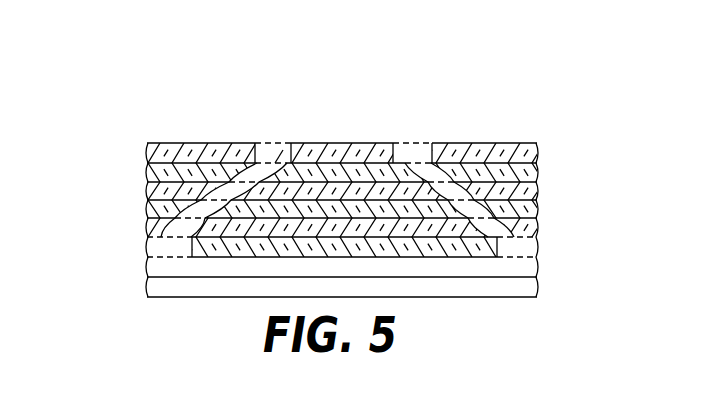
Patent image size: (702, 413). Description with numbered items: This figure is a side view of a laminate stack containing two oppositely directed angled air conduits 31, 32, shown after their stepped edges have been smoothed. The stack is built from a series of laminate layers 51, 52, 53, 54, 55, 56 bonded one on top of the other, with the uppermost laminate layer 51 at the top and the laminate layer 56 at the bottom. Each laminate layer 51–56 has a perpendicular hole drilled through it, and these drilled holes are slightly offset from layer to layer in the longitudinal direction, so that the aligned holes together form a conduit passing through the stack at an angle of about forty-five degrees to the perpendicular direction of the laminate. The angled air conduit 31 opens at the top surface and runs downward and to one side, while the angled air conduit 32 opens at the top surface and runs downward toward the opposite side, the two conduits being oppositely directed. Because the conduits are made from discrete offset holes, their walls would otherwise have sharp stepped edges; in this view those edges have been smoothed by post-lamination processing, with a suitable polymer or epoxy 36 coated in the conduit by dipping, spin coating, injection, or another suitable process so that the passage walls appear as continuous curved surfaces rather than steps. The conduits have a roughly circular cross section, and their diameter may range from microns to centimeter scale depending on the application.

The angled air conduit 31 is at (271, 140).
The angled air conduit 32 is at (411, 139).
The polymer or epoxy 36 is at (283, 150).
The laminate layer 51 is at (148, 157).
The laminate layer 52 is at (148, 173).
The laminate layer 53 is at (148, 191).
The laminate layer 54 is at (150, 213).
The laminate layer 55 is at (152, 237).
The laminate layer 56 is at (190, 250).